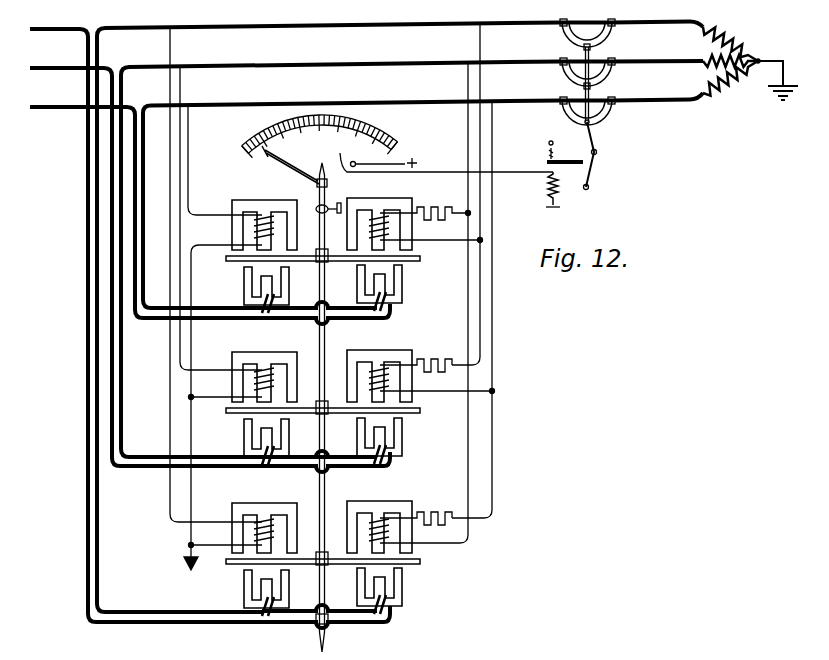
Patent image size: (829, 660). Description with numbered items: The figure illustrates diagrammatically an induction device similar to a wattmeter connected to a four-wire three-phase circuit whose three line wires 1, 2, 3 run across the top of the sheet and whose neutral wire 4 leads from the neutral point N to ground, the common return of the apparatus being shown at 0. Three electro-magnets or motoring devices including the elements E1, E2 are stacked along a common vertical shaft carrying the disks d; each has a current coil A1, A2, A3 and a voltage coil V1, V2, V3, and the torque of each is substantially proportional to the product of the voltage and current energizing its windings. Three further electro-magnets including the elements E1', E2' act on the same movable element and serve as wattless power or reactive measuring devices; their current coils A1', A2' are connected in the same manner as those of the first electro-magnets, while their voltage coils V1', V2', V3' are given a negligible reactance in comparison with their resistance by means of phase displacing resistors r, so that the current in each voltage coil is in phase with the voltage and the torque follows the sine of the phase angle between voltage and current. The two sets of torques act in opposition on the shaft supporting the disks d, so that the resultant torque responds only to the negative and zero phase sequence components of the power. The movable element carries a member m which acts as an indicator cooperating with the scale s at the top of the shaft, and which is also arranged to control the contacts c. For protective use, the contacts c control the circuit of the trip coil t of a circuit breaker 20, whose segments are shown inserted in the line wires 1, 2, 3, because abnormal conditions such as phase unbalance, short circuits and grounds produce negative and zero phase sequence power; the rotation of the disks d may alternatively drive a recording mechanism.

The line wire 1 is at (224, 108).
The line wire 2 is at (244, 69).
The line wire 3 is at (257, 29).
The neutral wire 4 is at (769, 57).
The circuit breaker 20 is at (600, 113).
The ground return 0 is at (219, 407).
The neutral point N is at (757, 64).
The resistor r is at (437, 514).
The trip coil t is at (547, 178).
The scale s is at (377, 128).
The member m is at (290, 174).
The contacts c is at (443, 156).
The disks d is at (302, 576).
The electro-magnet E1 is at (251, 376).
The electro-magnet E1' is at (394, 375).
The electro-magnet E2 is at (250, 437).
The electro-magnet E2' is at (394, 435).
The voltage coil V1 is at (272, 230).
The voltage coil V2 is at (272, 382).
The voltage coil V3 is at (272, 533).
The voltage coil V1' is at (373, 229).
The voltage coil V2' is at (373, 381).
The voltage coil V3' is at (373, 532).
The current coil A1 is at (265, 292).
The current coil A2 is at (265, 444).
The current coil A3 is at (265, 595).
The current coil A1' is at (380, 290).
The current coil A2' is at (380, 518).